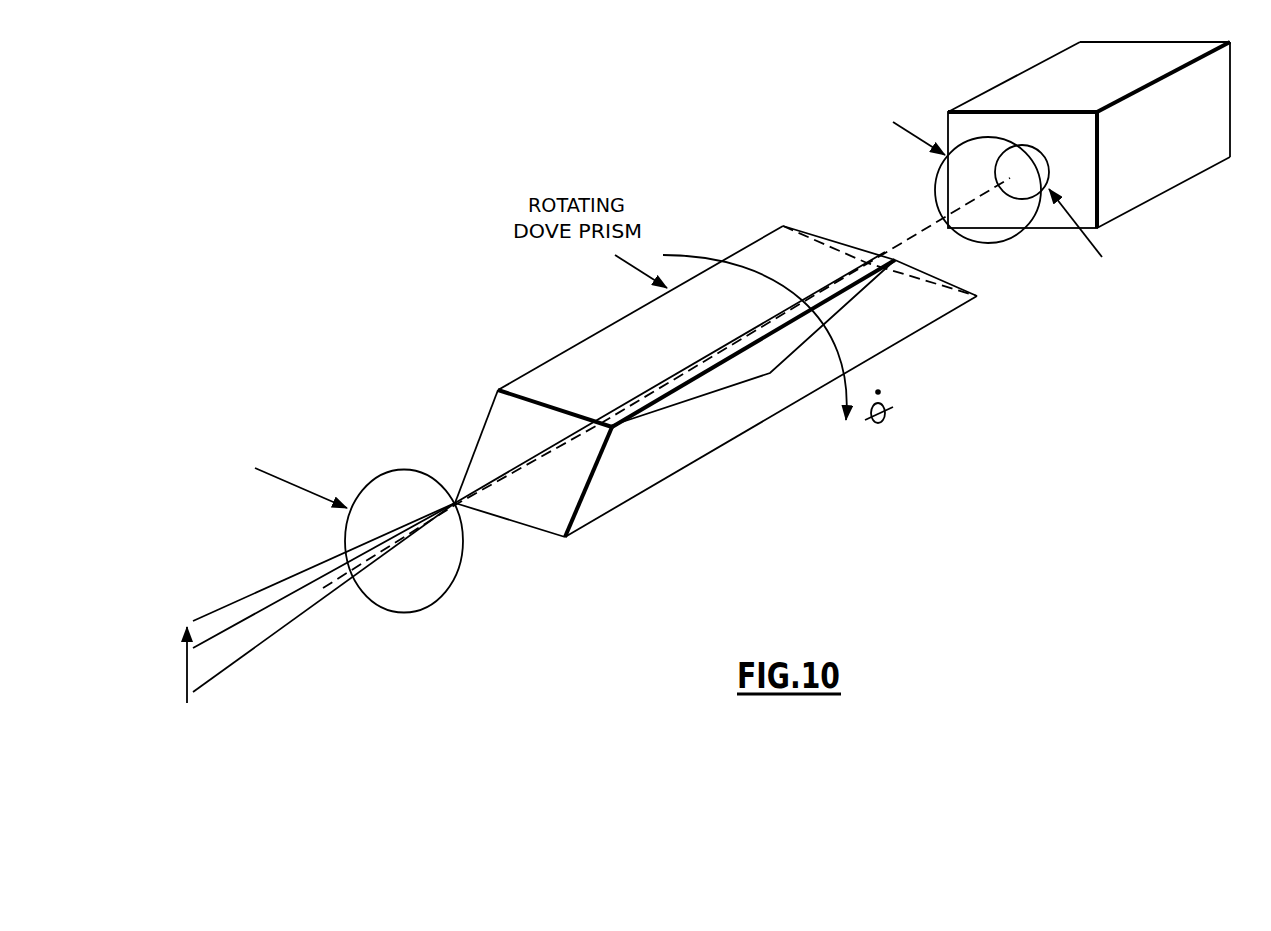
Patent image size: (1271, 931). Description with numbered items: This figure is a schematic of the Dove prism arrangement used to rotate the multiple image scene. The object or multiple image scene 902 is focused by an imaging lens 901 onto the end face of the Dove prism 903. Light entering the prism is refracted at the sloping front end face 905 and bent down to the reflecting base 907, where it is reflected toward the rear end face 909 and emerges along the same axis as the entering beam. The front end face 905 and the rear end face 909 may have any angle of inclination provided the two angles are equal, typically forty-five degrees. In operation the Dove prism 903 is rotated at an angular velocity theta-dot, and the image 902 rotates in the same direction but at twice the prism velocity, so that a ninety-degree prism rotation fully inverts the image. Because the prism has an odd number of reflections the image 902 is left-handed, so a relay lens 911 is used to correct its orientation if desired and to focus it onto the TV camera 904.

The imaging lens 901 is at (385, 473).
The multiple image scene 902 is at (186, 668).
The Dove prism 903 is at (558, 357).
The camera 904 is at (1037, 63).
The sloping front end face 905 is at (552, 503).
The reflecting base 907 is at (672, 463).
The rear end face 909 is at (798, 210).
The relay lens 911 is at (1018, 237).